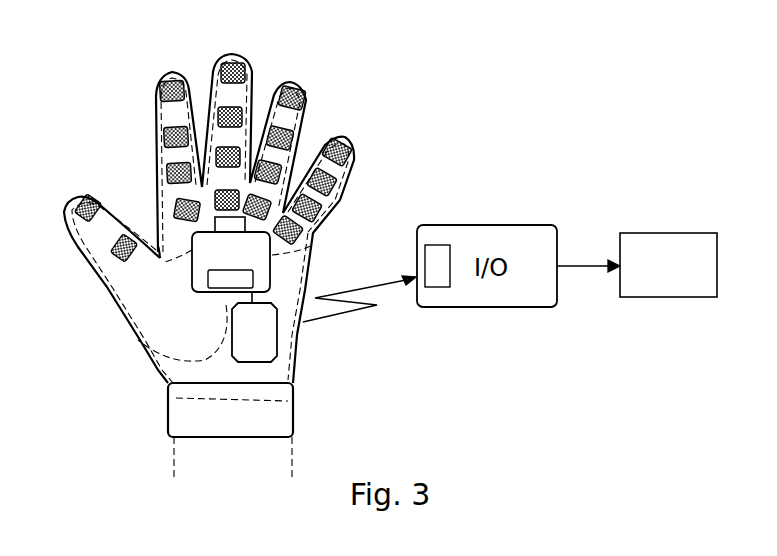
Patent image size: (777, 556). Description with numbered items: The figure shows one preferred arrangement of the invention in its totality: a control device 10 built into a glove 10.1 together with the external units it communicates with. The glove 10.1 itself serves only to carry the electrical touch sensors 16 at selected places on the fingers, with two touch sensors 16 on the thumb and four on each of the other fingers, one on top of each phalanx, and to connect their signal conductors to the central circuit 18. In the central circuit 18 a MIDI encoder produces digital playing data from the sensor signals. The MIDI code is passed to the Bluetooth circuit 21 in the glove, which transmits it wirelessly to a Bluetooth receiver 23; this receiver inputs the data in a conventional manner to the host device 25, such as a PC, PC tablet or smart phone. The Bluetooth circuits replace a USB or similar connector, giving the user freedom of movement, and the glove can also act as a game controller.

The device 10 is at (134, 112).
The glove 10.1 is at (182, 333).
The touch sensors 16 is at (208, 186).
The central circuit 18 is at (192, 266).
The Bluetooth circuit 21 is at (263, 350).
The Bluetooth receiver 23 is at (437, 248).
The host device 25 is at (642, 287).